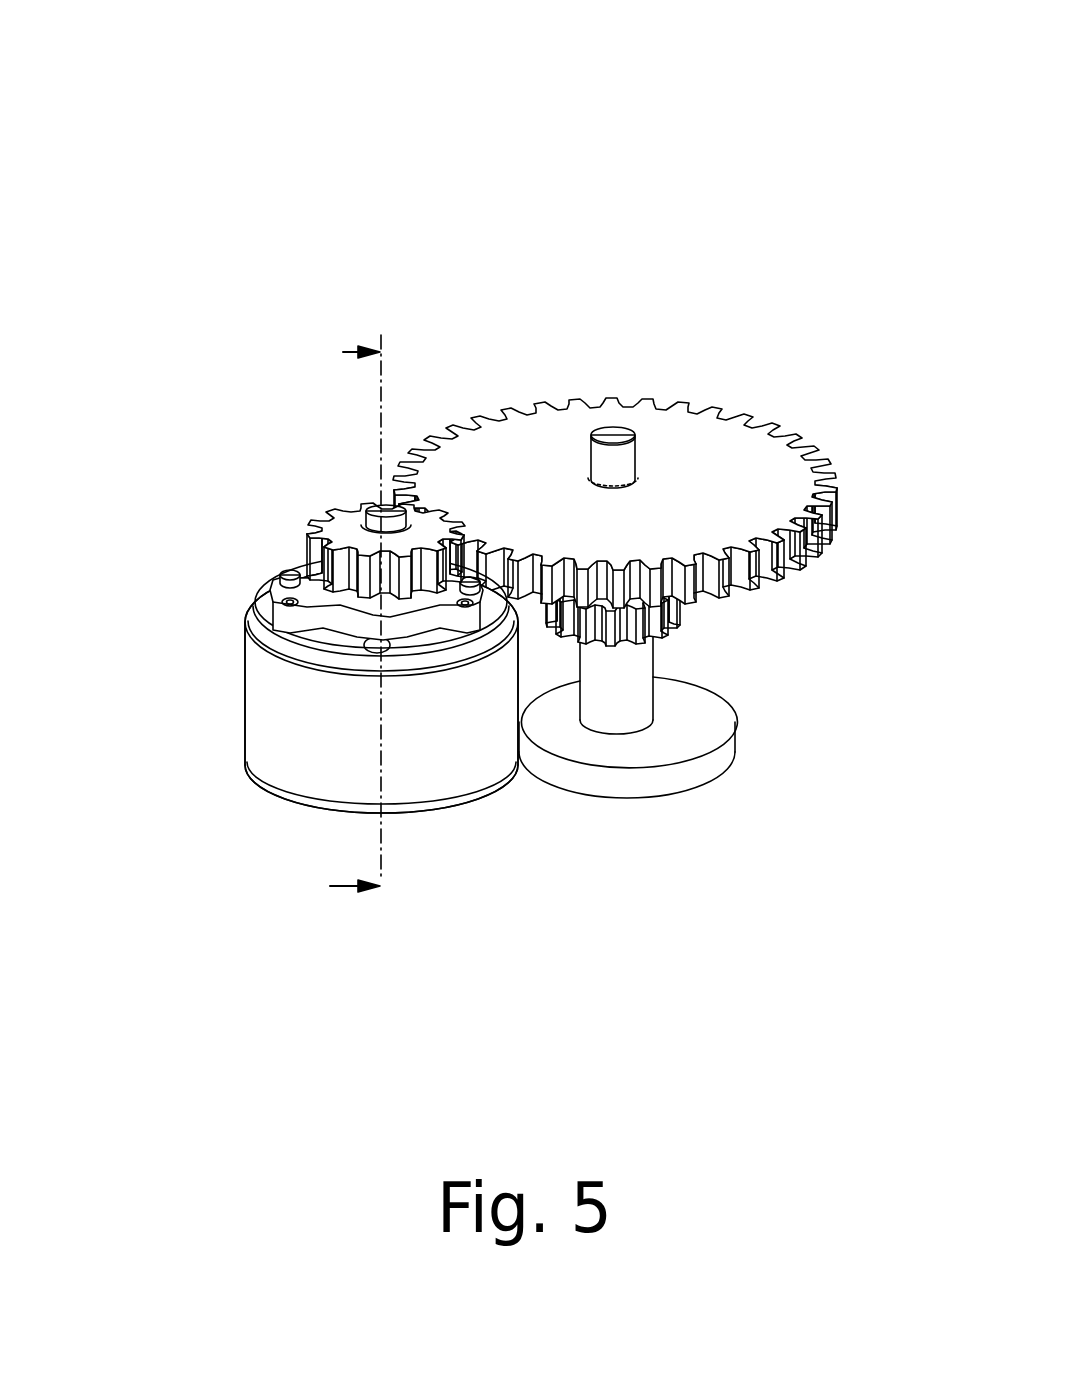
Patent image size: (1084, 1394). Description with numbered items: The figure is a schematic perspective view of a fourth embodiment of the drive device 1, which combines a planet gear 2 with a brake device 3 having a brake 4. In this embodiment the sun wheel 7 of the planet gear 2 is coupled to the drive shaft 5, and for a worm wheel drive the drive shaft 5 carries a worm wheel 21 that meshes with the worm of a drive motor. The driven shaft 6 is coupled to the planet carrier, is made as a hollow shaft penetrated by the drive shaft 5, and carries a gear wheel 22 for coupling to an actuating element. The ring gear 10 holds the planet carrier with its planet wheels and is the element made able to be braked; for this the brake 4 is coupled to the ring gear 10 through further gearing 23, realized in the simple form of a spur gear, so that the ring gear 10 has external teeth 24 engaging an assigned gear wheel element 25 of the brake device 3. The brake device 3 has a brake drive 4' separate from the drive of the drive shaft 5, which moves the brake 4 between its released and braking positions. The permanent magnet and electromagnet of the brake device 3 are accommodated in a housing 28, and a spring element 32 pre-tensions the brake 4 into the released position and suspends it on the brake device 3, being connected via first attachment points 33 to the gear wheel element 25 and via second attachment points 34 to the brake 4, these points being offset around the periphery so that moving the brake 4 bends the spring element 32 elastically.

The drive device 1 is at (342, 205).
The planet gear 2 is at (741, 623).
The brake device 3 is at (218, 812).
The brake 4 is at (368, 760).
The brake drive 4' is at (287, 664).
The drive shaft 5 is at (622, 467).
The driven shaft 6 is at (637, 678).
The sun wheel 7 is at (613, 457).
The ring gear 10 is at (797, 598).
The worm wheel 21 is at (620, 777).
The gear wheel 22 is at (680, 622).
The further gearing 23 is at (335, 484).
The external teeth 24 is at (830, 510).
The gear wheel element 25 is at (320, 567).
The housing 28 is at (262, 730).
The spring element 32 is at (413, 647).
The first attachment points 33 is at (277, 583).
The second attachment points 34 is at (310, 563).